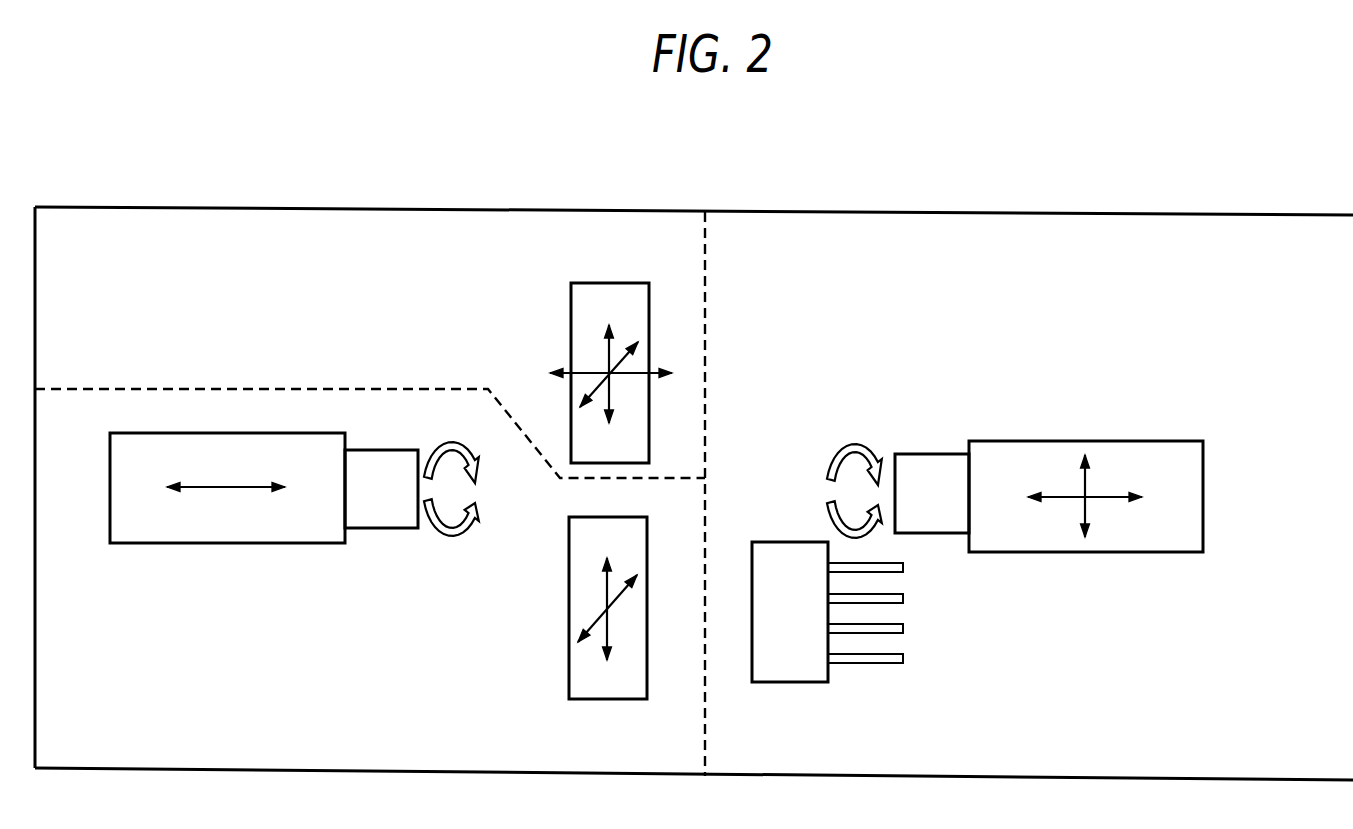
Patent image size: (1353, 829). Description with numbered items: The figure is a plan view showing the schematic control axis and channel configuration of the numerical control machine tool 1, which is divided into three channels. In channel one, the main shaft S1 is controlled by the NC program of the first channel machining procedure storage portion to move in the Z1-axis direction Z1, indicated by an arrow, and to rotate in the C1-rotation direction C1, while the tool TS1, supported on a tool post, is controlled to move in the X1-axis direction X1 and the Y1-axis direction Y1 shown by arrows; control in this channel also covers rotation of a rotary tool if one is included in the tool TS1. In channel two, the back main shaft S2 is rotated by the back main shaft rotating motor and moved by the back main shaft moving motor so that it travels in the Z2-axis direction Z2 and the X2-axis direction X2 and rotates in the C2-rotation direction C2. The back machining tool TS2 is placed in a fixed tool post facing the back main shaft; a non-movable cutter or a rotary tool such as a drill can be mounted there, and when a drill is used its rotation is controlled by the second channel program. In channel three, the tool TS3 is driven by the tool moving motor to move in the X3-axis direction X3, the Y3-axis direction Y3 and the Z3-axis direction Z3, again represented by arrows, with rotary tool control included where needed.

The numerical control machine tool 1 is at (1038, 213).
The main shaft S1 is at (225, 543).
The Z1-axis direction Z1 is at (226, 506).
The C1-rotation direction C1 is at (451, 509).
The tool TS1 is at (605, 700).
The X1-axis direction X1 is at (605, 625).
The Y1-axis direction Y1 is at (585, 621).
The tool TS3 is at (612, 283).
The X3-axis direction X3 is at (609, 391).
The Y3-axis direction Y3 is at (587, 387).
The Z3-axis direction Z3 is at (595, 373).
The back main shaft S2 is at (1085, 552).
The X2-axis direction X2 is at (1087, 472).
The Z2-axis direction Z2 is at (1097, 514).
The C2-rotation direction C2 is at (854, 472).
The back machining tool TS2 is at (790, 682).